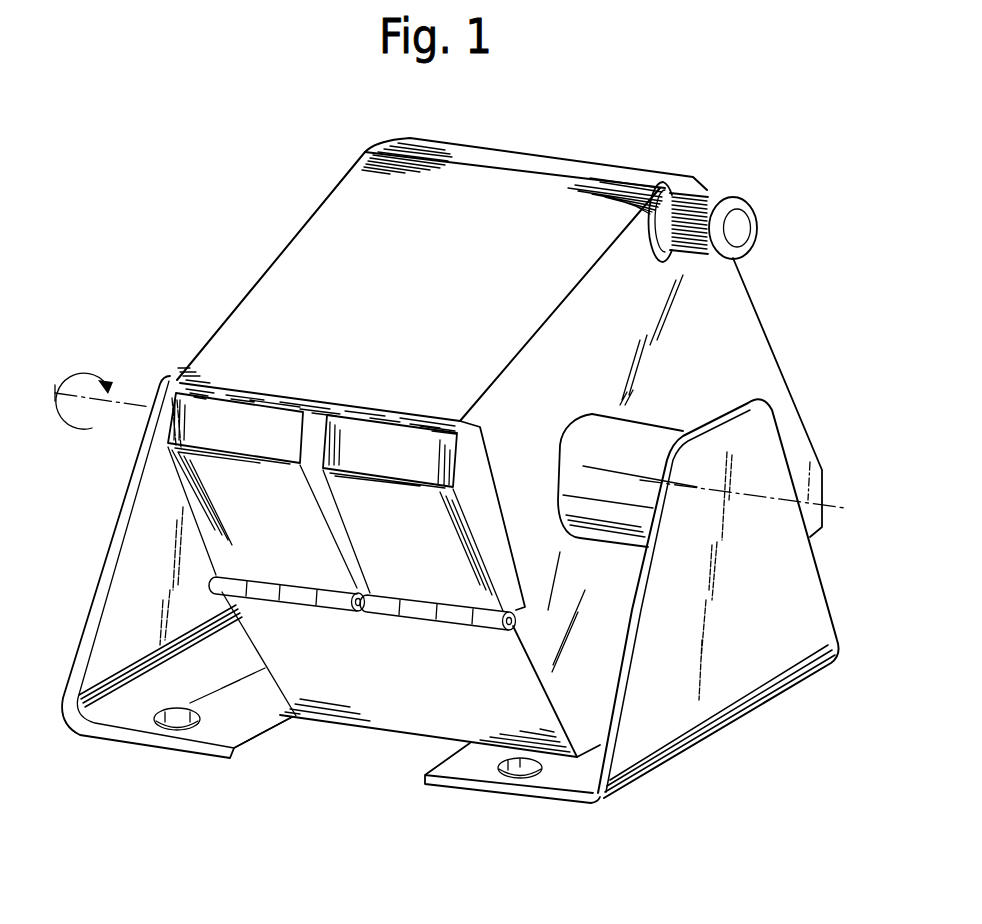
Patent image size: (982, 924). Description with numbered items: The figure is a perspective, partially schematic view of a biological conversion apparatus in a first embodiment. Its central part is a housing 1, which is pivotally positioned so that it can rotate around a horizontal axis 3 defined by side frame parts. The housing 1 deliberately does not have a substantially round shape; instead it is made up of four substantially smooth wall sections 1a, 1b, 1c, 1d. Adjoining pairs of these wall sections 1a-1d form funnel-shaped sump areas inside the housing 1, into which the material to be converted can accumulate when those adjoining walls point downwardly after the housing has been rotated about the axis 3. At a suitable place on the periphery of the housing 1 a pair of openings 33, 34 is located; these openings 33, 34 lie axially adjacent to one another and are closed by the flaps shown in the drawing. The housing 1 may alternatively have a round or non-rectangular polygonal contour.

The housing 1 is at (735, 362).
The wall section 1a is at (307, 247).
The wall section 1b is at (382, 692).
The wall section 1c is at (812, 536).
The wall section 1d is at (758, 307).
The horizontal axis 3 is at (812, 464).
The opening 33 is at (455, 552).
The opening 34 is at (217, 487).